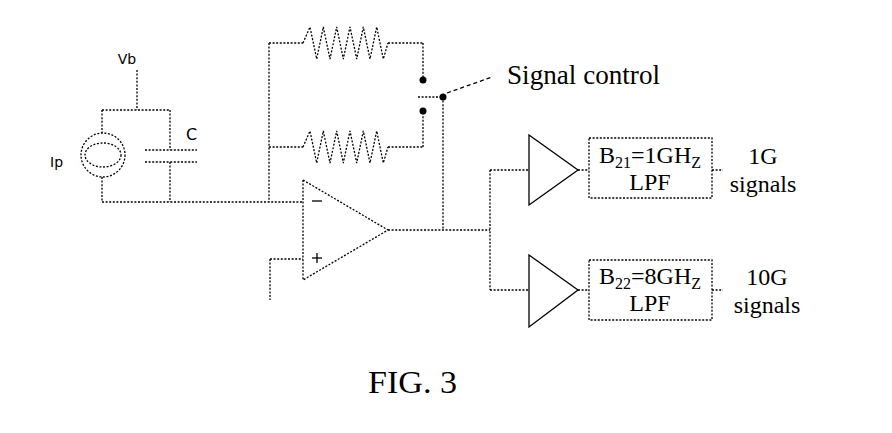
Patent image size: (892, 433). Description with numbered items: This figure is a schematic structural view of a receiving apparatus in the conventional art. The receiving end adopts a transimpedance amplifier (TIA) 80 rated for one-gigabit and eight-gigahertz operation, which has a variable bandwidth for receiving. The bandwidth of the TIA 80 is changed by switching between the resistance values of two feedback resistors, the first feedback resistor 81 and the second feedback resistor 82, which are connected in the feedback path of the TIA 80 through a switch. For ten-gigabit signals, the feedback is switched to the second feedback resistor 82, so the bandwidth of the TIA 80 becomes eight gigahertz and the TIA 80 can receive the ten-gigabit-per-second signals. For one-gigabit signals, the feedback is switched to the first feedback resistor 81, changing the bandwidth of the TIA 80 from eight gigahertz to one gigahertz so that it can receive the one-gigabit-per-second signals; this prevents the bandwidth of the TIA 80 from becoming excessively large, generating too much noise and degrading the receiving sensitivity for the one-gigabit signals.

The transimpedance amplifier (TIA) 80 is at (338, 260).
The feedback resistor R1 81 is at (370, 162).
The feedback resistor R2 82 is at (377, 33).